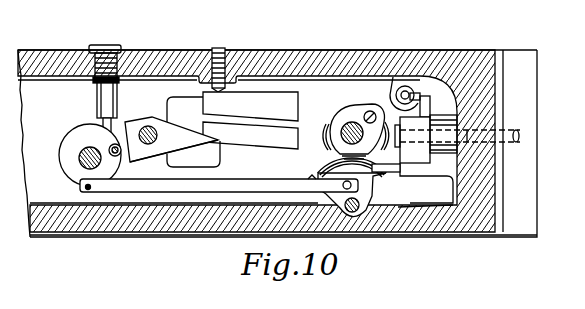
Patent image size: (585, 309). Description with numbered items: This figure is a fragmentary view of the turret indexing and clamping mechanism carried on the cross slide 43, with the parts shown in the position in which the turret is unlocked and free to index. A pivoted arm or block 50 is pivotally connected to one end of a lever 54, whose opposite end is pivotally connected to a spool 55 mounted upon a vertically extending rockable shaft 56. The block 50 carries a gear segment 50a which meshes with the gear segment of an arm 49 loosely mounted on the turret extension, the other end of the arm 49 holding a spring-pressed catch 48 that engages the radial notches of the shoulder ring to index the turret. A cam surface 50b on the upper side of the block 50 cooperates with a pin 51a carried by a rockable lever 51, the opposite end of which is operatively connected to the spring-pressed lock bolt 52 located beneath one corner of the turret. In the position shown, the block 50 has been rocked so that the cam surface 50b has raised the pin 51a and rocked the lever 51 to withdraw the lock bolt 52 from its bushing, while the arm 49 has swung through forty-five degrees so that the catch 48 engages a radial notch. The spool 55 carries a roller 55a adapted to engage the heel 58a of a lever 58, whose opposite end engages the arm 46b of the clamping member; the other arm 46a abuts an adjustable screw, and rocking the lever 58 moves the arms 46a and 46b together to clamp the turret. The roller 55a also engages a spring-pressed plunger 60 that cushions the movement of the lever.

The cross slide 43 is at (308, 56).
The lock bolt 52 is at (403, 82).
The arm 49 is at (350, 108).
The spring-pressed catch 48 is at (371, 110).
The arm of clamping member 46a is at (250, 84).
The arm of clamping member 46b is at (250, 135).
The lever 58 is at (171, 139).
The heel 58a is at (128, 166).
The spring-pressed plunger 60 is at (103, 130).
The roller 55a is at (117, 143).
The rockable shaft 56 is at (86, 151).
The spool 55 is at (66, 170).
The lever 54 is at (199, 190).
The gear segment 50a is at (309, 179).
The cam surface 50b is at (336, 172).
The pivoted block 50 is at (370, 188).
The rockable lever 51 is at (457, 148).
The pin 51a is at (385, 174).